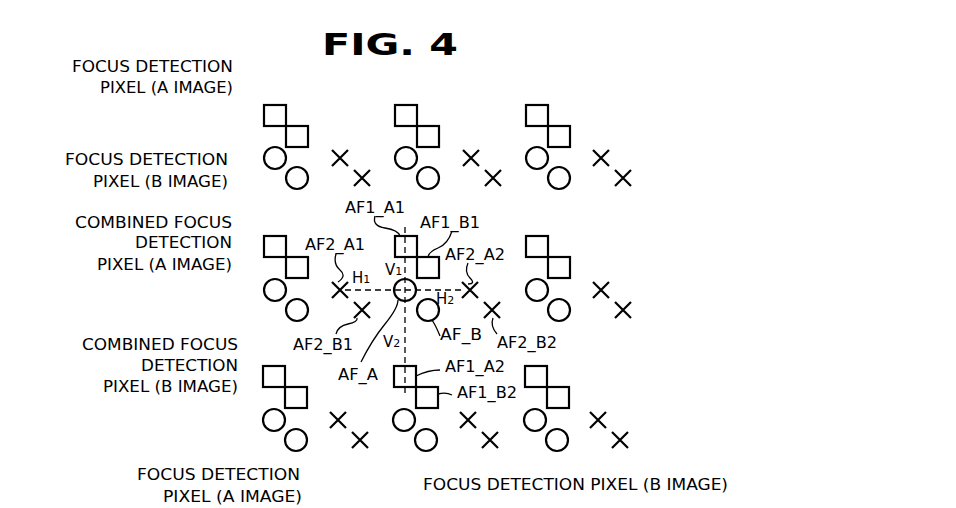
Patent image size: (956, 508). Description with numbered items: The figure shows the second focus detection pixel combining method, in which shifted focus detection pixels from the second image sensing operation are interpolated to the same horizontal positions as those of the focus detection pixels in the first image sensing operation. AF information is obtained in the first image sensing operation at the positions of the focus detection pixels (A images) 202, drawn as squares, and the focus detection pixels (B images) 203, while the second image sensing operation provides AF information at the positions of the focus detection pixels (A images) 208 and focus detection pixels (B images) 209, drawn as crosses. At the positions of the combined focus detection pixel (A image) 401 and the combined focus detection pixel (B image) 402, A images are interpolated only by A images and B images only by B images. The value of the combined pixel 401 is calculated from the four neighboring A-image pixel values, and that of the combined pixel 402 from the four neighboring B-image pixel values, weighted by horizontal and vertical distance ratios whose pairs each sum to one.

The focus detection pixel (A image) 202 is at (264, 112).
The focus detection pixel (B image) 203 is at (286, 136).
The combined focus detection pixel (A image) 401 is at (264, 290).
The combined focus detection pixel (B image) 402 is at (287, 312).
The focus detection pixel (A image) 208 is at (334, 432).
The focus detection pixel (B image) 209 is at (358, 452).